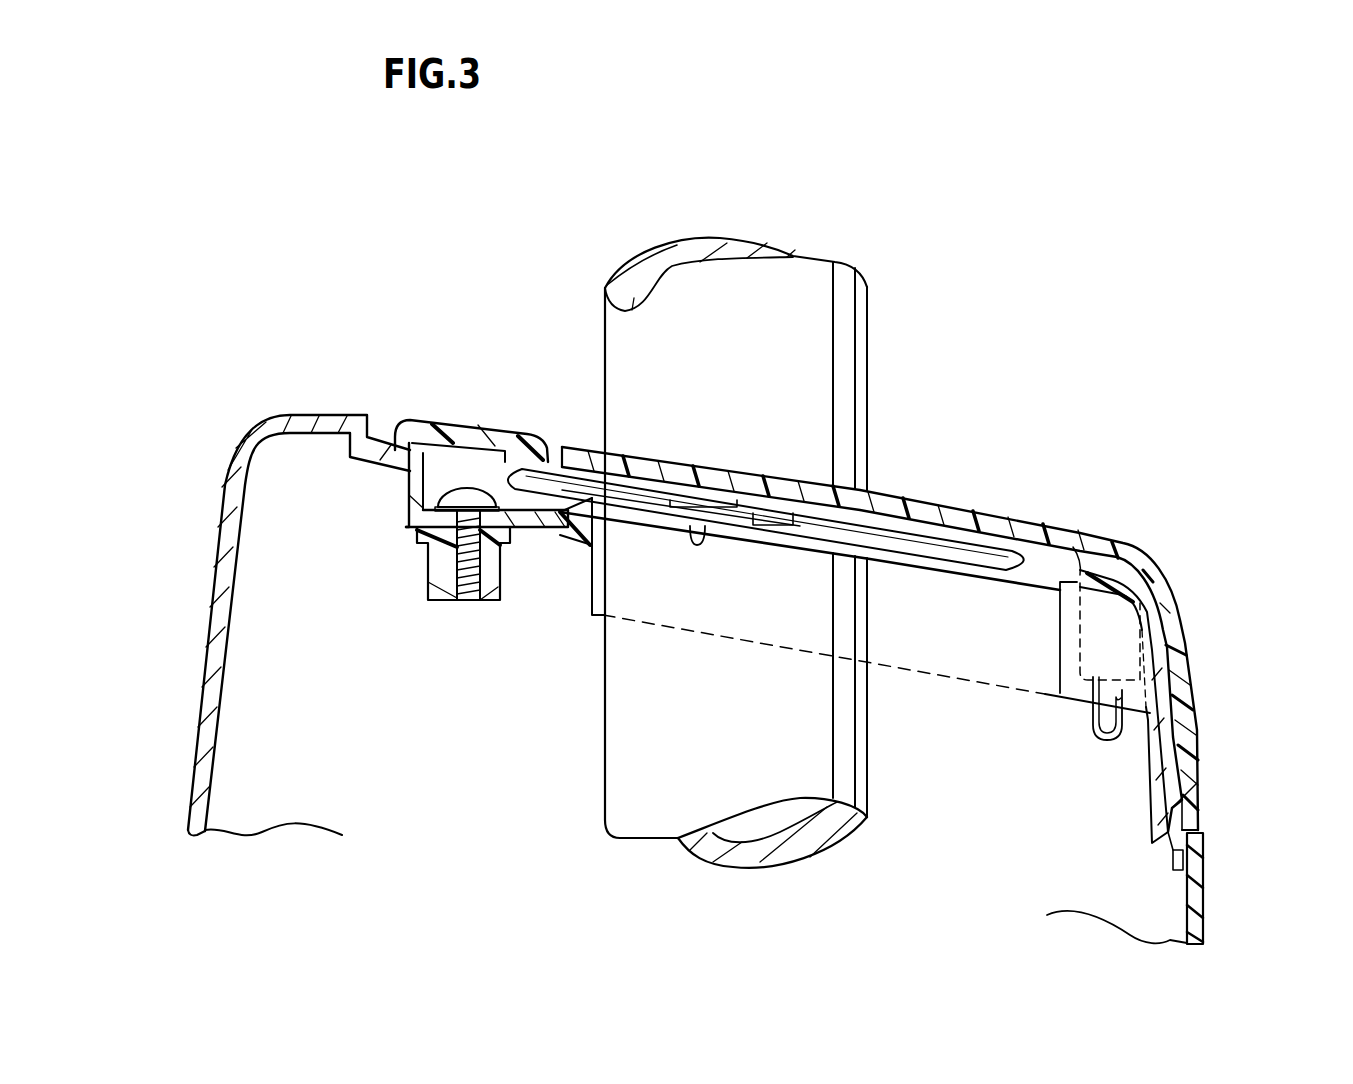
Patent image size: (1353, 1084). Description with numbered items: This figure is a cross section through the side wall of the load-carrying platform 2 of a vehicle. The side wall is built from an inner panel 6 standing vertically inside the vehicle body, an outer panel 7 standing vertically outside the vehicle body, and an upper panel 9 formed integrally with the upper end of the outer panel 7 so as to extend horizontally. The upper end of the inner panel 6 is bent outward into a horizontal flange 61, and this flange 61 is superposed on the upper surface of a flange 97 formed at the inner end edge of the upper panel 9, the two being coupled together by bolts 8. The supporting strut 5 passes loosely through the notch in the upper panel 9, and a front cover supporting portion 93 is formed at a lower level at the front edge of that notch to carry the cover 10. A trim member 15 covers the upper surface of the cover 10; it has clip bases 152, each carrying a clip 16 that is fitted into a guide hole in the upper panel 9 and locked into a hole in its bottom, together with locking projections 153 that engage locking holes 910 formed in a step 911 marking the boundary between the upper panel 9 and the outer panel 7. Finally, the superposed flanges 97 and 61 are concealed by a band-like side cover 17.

The load-carrying platform 2 is at (112, 715).
The supporting strut 5 is at (855, 325).
The inner panel 6 is at (205, 662).
The flange 61 is at (515, 515).
The outer panel 7 is at (1203, 903).
The bolts 8 is at (462, 490).
The upper panel 9 is at (910, 572).
The front cover supporting portion 93 is at (794, 513).
The flange 97 is at (523, 540).
The locking holes 910 is at (1173, 857).
The step 911 is at (1198, 822).
The cover 10 is at (807, 500).
The trim member 15 is at (1123, 534).
The clip bases 152 is at (1080, 645).
The locking projections 153 is at (1177, 867).
The clip 16 is at (1098, 745).
The side cover 17 is at (413, 425).